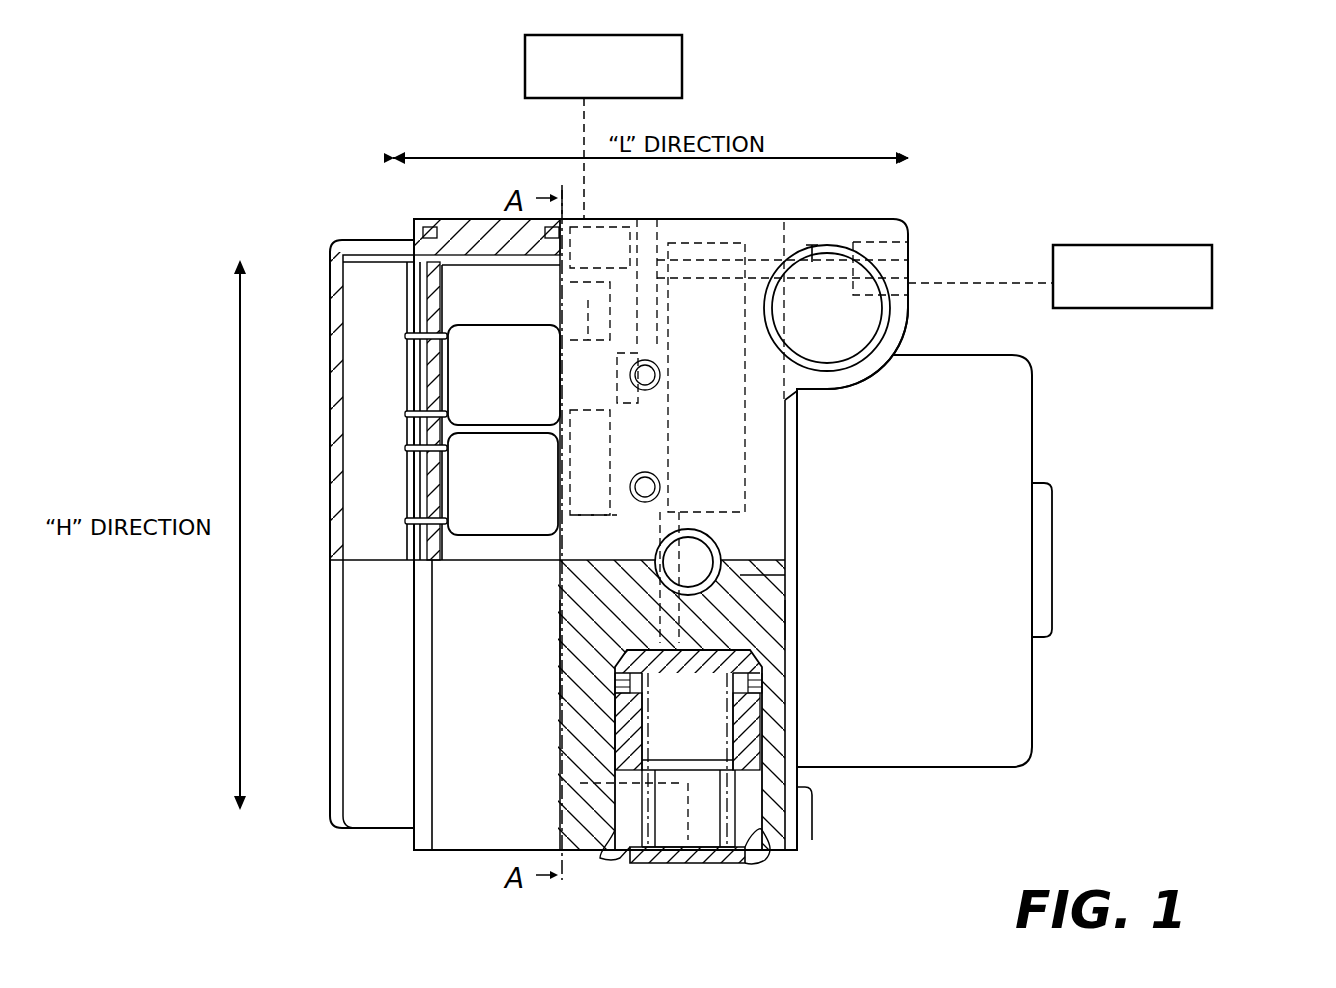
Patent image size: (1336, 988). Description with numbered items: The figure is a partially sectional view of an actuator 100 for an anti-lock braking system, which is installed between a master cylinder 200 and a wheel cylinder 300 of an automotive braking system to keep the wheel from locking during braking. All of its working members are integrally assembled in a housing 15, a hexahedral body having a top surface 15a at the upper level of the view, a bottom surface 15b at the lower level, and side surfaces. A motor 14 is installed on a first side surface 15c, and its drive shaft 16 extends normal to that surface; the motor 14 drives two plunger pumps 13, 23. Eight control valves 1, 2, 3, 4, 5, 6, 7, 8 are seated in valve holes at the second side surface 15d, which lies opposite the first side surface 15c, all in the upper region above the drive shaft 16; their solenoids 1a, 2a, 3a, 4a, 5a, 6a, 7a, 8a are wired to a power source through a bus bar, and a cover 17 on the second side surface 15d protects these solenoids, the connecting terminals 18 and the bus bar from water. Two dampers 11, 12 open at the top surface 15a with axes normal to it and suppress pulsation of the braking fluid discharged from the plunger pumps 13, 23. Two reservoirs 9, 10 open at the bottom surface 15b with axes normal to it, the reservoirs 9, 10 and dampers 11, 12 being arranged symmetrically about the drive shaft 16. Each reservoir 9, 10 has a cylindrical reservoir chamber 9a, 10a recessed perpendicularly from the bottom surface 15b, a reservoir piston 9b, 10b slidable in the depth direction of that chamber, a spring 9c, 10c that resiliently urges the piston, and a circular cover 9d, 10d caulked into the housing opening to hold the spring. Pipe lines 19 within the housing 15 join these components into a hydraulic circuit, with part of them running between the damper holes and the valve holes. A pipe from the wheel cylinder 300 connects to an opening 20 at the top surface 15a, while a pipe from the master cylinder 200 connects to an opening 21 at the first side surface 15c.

The actuator for an anti-lock braking system 100 is at (1018, 197).
The master cylinder 200 is at (1213, 270).
The wheel cylinder 300 is at (684, 58).
The control valve 1 is at (539, 326).
The control valve 2 is at (539, 326).
The control valve 3 is at (539, 326).
The control valve 4 is at (578, 355).
The solenoid 1a is at (504, 375).
The solenoid 2a is at (504, 375).
The solenoid 3a is at (504, 375).
The solenoid 4a is at (545, 364).
The control valve 5 is at (554, 472).
The control valve 6 is at (554, 472).
The control valve 7 is at (554, 472).
The control valve 8 is at (577, 482).
The solenoid 5a is at (503, 484).
The solenoid 6a is at (503, 484).
The solenoid 7a is at (503, 484).
The solenoid 8a is at (548, 499).
The reservoir 9 is at (762, 791).
The reservoir 10 is at (747, 743).
The reservoir chamber 9a is at (744, 687).
The reservoir chamber 10a is at (658, 672).
The reservoir piston 9b is at (662, 845).
The reservoir piston 10b is at (628, 765).
The spring 9c is at (780, 721).
The spring 10c is at (723, 723).
The circular cover 9d is at (763, 880).
The circular cover 10d is at (738, 858).
The damper 11 is at (762, 340).
The damper 12 is at (713, 242).
The plunger pump 13 is at (730, 577).
The plunger pump 23 is at (720, 545).
The motor 14 is at (1020, 432).
The housing 15 is at (572, 712).
The top surface 15a is at (812, 222).
The bottom surface 15b is at (588, 853).
The first side surface 15c is at (785, 620).
The second side surface 15d is at (558, 640).
The drive shaft 16 is at (760, 570).
The cover 17 is at (362, 797).
The connecting terminals 18 is at (420, 335).
The pipe lines 19 is at (812, 250).
The opening 20 is at (606, 219).
The opening 21 is at (910, 256).